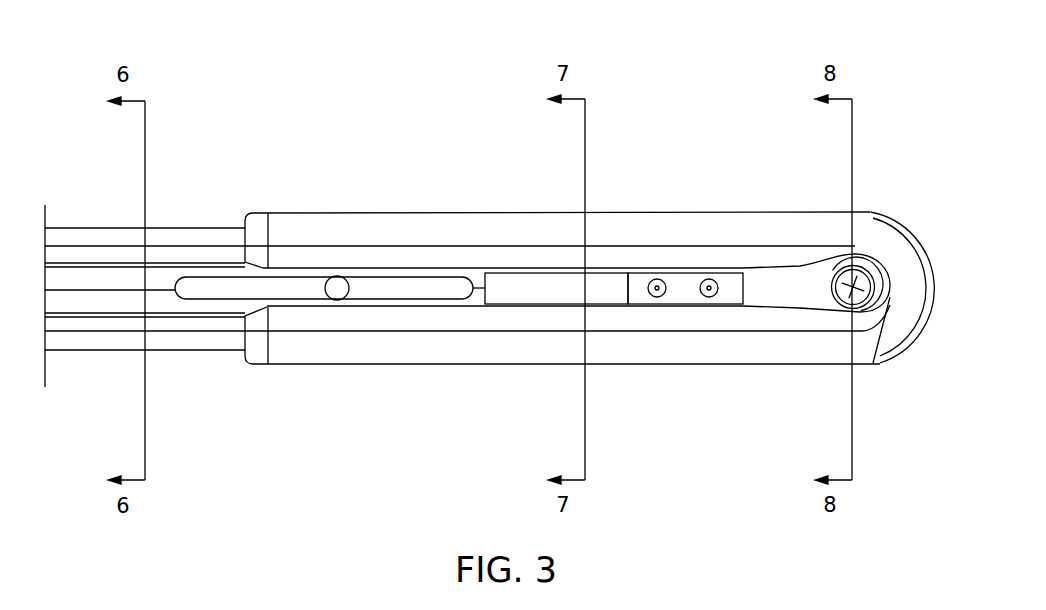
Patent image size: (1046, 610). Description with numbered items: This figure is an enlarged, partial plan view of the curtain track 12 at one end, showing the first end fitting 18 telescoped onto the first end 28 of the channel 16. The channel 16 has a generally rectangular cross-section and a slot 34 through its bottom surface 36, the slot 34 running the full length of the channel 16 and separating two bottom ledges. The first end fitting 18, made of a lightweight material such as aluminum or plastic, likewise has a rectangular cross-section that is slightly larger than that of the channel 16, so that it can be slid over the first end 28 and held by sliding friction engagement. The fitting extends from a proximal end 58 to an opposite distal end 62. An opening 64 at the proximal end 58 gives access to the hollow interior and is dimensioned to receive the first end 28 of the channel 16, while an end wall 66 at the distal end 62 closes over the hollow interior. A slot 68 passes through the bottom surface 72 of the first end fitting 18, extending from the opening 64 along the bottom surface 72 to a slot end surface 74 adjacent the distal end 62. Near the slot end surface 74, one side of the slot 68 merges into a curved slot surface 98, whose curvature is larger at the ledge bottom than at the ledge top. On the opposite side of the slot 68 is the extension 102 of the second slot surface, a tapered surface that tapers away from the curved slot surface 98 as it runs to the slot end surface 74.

The curtain track 12 is at (362, 88).
The channel 16 is at (182, 227).
The first end fitting 18 is at (372, 213).
The first end of the channel 28 is at (488, 278).
The slot 34 is at (114, 320).
The bottom surface of the channel 36 is at (235, 292).
The proximal end of the first end fitting 58 is at (244, 238).
The distal end of the first end fitting 62 is at (920, 240).
The opening 64 is at (160, 326).
The end wall 66 is at (933, 290).
The slot of the first end fitting 68 is at (614, 268).
The bottom surface of the first end fitting 72 is at (647, 267).
The slot end surface 74 is at (873, 363).
The curved slot surface 98 is at (855, 257).
The extension of the second slot surface 102 is at (792, 305).